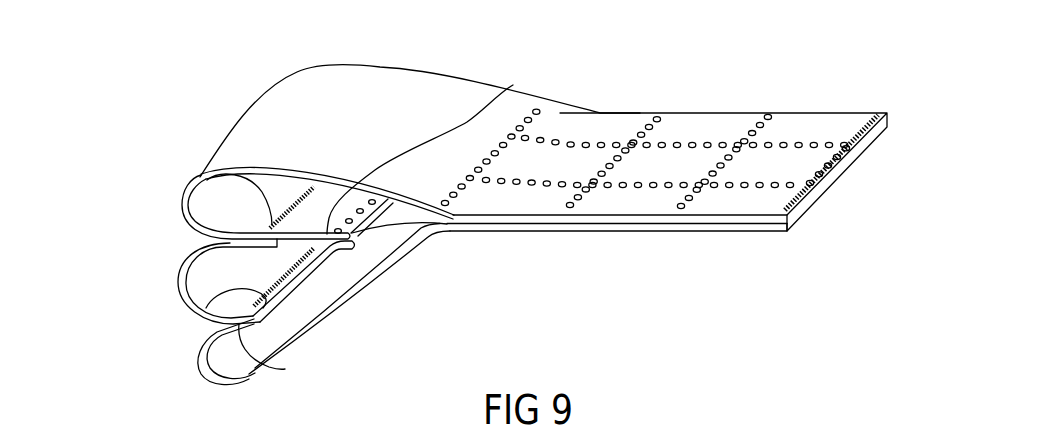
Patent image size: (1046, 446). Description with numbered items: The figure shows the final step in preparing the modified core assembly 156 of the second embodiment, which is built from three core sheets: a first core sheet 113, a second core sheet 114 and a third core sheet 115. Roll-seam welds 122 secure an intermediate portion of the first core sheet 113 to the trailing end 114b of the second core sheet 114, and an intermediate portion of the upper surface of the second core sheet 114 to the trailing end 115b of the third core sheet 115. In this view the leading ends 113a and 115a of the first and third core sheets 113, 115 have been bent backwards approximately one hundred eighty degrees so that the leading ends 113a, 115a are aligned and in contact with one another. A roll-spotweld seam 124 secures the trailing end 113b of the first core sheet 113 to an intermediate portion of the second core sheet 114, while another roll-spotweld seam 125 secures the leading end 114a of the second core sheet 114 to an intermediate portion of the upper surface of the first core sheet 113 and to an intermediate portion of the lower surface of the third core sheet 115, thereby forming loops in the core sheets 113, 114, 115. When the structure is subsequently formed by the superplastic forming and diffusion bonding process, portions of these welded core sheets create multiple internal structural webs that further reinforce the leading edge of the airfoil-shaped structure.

The first core sheet 113 is at (416, 101).
The leading end of first core sheet 113a is at (857, 127).
The trailing end of first core sheet 113b is at (513, 85).
The roll-spotweld seam 125 is at (640, 113).
The modified core assembly 156 is at (622, 100).
The roll-seam welds 122 is at (200, 177).
The second core sheet 114 is at (189, 278).
The leading end of second core sheet 114a is at (446, 220).
The trailing end of second core sheet 114b is at (222, 239).
The third core sheet 115 is at (332, 301).
The leading end of third core sheet 115a is at (753, 230).
The trailing end of third core sheet 115b is at (285, 369).
The roll-spotweld seam 124 is at (356, 245).